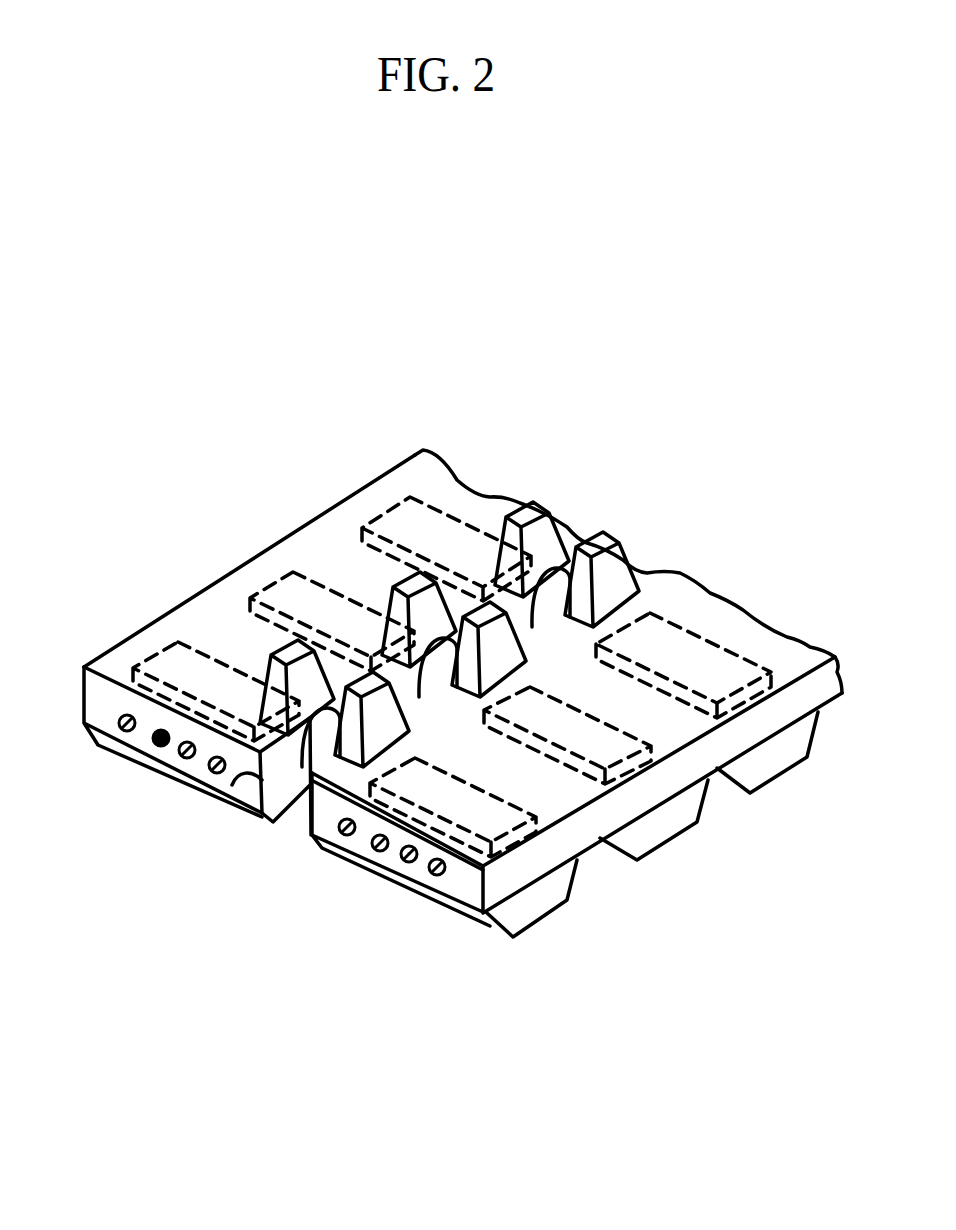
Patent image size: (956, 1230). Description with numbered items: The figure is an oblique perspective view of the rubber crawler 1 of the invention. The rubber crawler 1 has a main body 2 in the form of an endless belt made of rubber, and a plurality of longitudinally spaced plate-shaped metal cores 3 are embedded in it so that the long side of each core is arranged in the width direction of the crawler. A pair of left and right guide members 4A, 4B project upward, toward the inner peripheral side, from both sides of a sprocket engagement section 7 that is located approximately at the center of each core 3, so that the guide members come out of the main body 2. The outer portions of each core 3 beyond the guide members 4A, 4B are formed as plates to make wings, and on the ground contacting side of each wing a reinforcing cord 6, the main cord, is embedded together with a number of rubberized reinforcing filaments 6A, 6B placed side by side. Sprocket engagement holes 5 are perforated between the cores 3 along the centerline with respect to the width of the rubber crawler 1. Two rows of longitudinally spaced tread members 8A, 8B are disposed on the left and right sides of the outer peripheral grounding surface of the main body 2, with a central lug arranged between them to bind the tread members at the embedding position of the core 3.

The rubber crawler 1 is at (728, 565).
The main body 2 is at (213, 613).
The metal core 3 is at (460, 478).
The guide member 4A is at (645, 600).
The guide member 4B is at (557, 527).
The sprocket engagement hole 5 is at (273, 778).
The reinforcing cord 6 is at (198, 1032).
The reinforcing filament 6A is at (402, 858).
The reinforcing filament 6B is at (160, 740).
The sprocket engagement section 7 is at (307, 835).
The tread member 8A is at (510, 907).
The tread member 8B is at (182, 783).